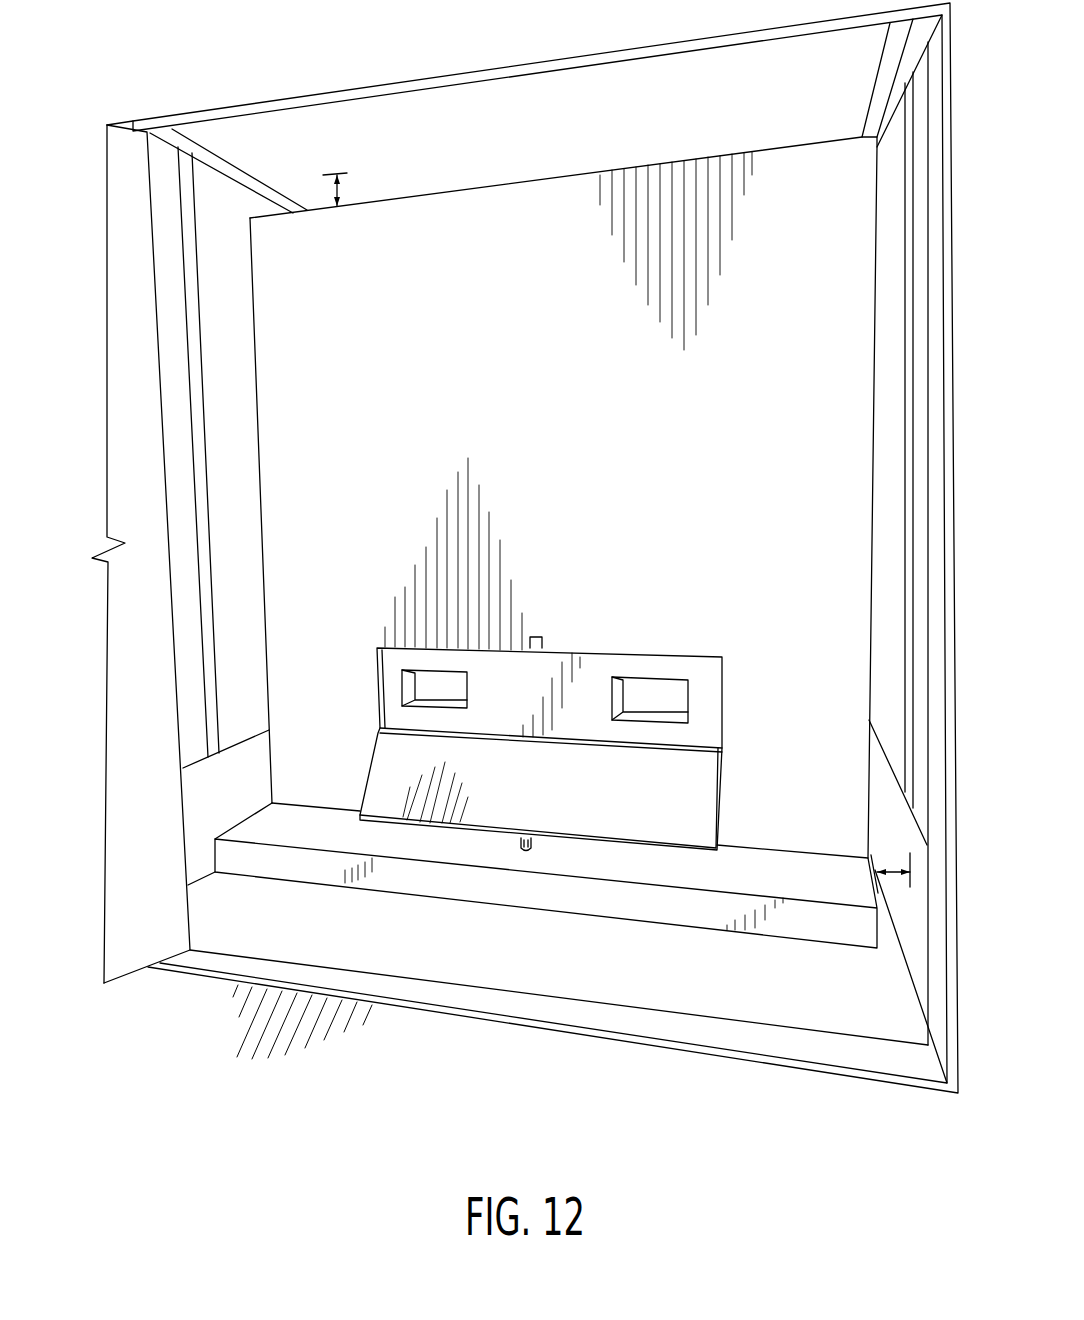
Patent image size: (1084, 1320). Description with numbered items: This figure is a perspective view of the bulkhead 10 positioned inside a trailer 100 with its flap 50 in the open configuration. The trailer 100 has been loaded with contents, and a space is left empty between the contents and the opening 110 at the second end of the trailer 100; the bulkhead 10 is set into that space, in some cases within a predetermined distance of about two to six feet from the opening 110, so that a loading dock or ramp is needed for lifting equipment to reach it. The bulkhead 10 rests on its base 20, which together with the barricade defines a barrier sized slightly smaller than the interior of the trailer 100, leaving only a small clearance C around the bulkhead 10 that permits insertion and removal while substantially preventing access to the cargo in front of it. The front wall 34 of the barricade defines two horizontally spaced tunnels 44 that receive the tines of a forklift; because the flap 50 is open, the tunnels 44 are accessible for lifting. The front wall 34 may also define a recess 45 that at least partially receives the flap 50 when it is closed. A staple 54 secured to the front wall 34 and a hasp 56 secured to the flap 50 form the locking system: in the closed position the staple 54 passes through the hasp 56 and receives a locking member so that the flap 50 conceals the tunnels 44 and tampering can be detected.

The bulkhead 10 is at (493, 160).
The base 20 is at (335, 870).
The front wall 34 is at (589, 467).
The tunnels 44 is at (434, 656).
The recess 45 is at (568, 644).
The flap 50 is at (523, 803).
The staple 54 is at (537, 637).
The hasp 56 is at (537, 843).
The trailer 100 is at (168, 623).
The opening 110 is at (255, 1008).
The clearance gap dimension C is at (340, 193).